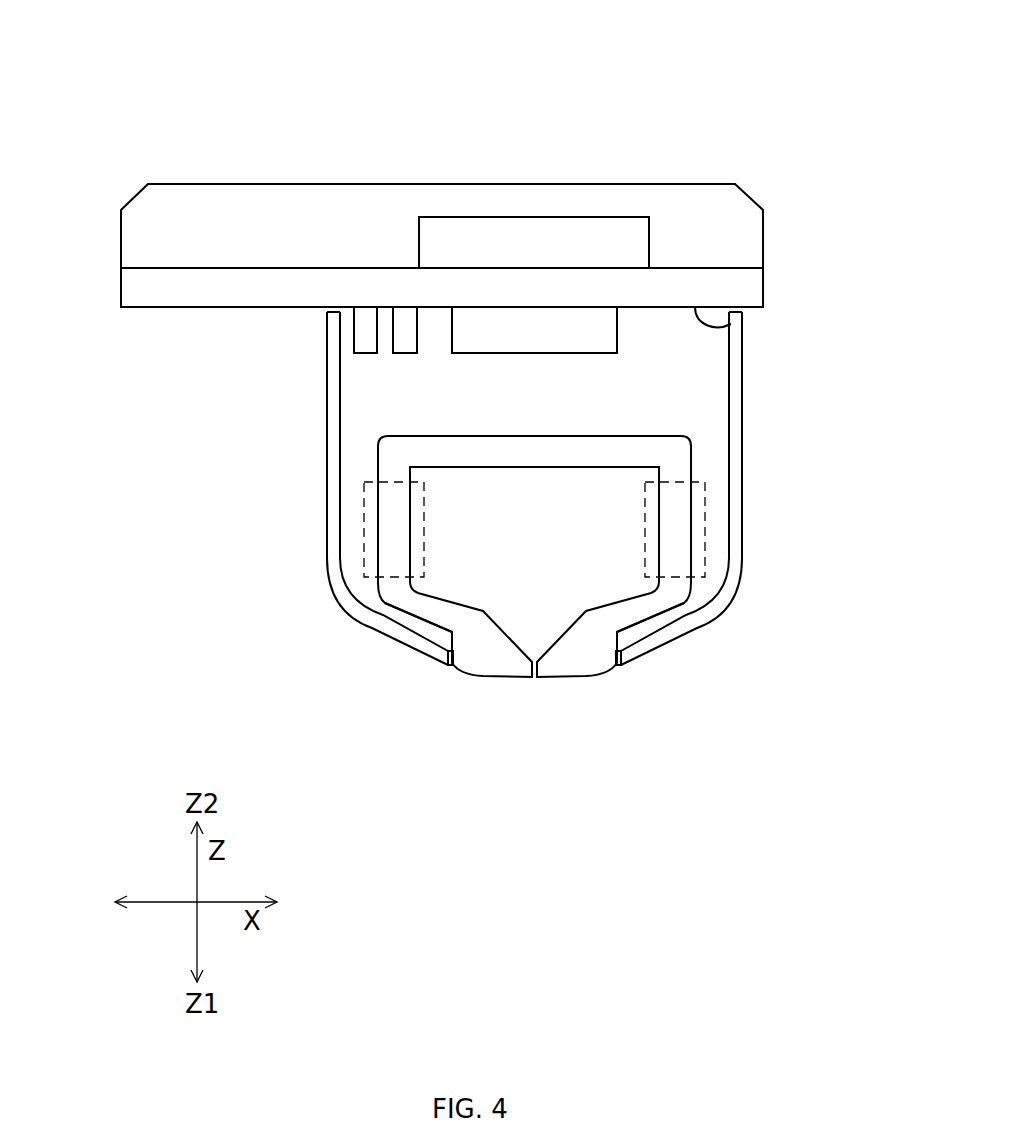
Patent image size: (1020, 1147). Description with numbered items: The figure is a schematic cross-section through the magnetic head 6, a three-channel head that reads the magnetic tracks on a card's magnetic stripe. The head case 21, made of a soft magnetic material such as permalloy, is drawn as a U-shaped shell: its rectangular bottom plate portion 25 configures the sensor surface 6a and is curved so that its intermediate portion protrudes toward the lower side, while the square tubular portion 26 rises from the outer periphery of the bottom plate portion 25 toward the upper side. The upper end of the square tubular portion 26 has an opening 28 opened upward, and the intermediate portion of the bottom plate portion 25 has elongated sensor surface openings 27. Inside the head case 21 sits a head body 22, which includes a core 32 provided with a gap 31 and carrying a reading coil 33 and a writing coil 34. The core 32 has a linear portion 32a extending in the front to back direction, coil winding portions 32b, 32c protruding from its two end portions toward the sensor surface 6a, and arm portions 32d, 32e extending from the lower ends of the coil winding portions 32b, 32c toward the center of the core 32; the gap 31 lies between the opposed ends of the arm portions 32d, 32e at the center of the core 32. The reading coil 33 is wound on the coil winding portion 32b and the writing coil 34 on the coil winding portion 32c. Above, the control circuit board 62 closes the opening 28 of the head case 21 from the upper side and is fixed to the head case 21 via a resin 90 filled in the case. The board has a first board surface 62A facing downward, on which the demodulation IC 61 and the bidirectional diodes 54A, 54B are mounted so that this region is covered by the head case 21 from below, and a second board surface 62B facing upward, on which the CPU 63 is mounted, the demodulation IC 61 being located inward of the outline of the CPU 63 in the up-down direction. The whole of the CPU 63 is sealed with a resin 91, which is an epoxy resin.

The magnetic head 6 is at (783, 118).
The sensor surface 6a is at (647, 640).
The head case 21 is at (587, 543).
The head body 22 is at (567, 553).
The bottom plate portion 25 is at (703, 634).
The square tubular portion 26 is at (748, 488).
The sensor surface opening 27 is at (451, 664).
The opening 28 is at (328, 308).
The gap 31 is at (534, 680).
The core 32 is at (692, 597).
The linear portion 32a is at (618, 440).
The coil winding portion 32b is at (680, 510).
The coil winding portion 32c is at (385, 542).
The arm portion 32d is at (643, 613).
The arm portion 32e is at (405, 602).
The reading coil 33 is at (706, 518).
The writing coil 34 is at (363, 518).
The bidirectional diode 54A is at (365, 354).
The bidirectional diode 54B is at (408, 354).
The demodulation IC 61 is at (518, 322).
The control circuit board 62 is at (168, 307).
The first board surface 62A is at (743, 326).
The second board surface 62B is at (698, 267).
The CPU 63 is at (564, 217).
The resin 90 is at (550, 409).
The resin 91 is at (330, 212).